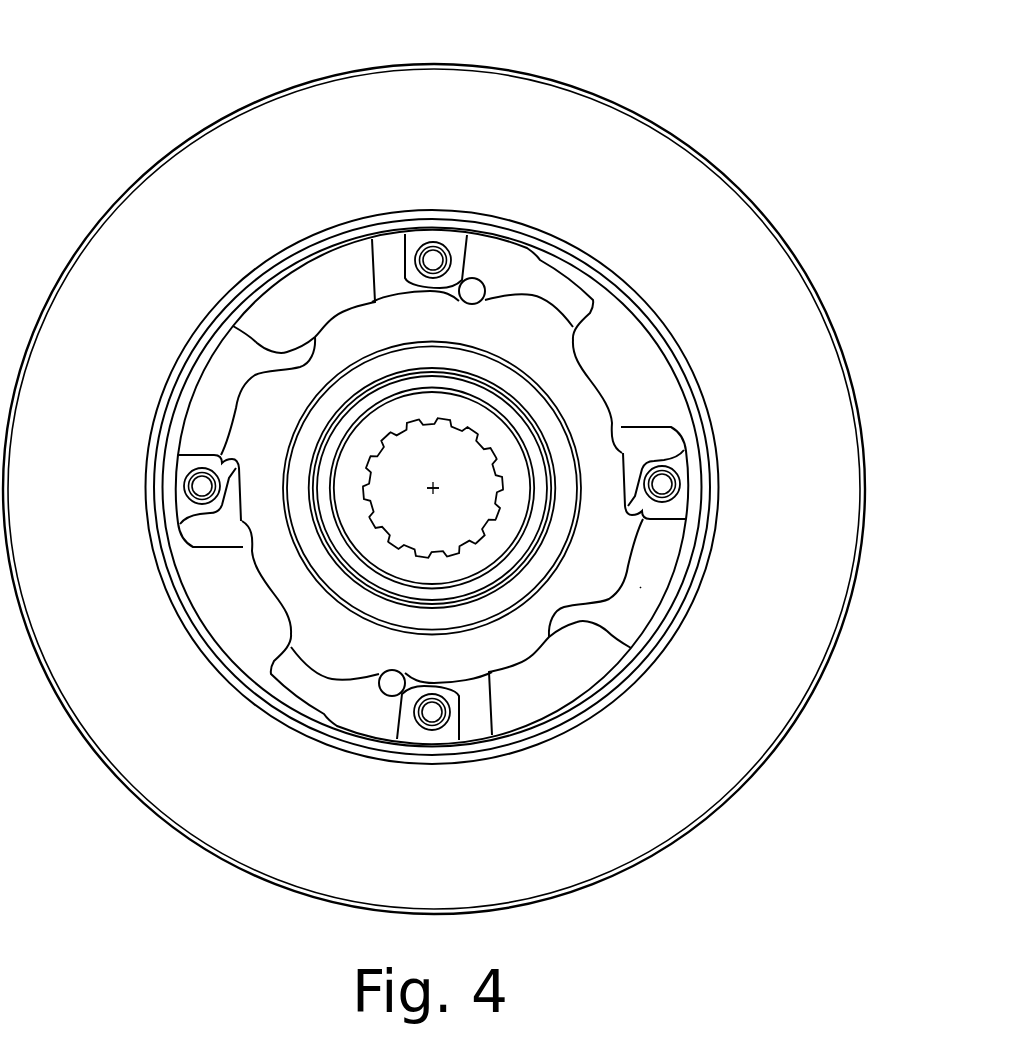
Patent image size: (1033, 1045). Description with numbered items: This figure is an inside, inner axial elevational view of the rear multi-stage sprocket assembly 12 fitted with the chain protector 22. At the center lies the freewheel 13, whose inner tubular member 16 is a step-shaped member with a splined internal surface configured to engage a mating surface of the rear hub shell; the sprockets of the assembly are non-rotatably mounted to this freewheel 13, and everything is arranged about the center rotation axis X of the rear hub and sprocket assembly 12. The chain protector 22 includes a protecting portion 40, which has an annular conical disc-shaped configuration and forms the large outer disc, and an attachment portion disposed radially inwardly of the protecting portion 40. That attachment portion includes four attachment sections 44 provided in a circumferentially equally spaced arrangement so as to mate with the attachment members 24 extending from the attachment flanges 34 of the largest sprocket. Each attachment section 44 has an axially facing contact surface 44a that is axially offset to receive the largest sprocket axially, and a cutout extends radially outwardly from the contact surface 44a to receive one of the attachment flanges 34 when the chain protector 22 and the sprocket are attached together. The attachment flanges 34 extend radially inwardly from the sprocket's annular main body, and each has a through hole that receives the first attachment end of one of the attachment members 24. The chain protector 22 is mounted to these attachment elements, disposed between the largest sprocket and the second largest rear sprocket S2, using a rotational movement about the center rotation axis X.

The rear multi-stage sprocket assembly 12 is at (716, 88).
The freewheel 13 is at (487, 418).
The inner tubular member 16 is at (535, 452).
The chain protector 22 is at (752, 188).
The attachment member 24 is at (433, 260).
The attachment flange 34 is at (460, 261).
The protecting portion 40 is at (160, 787).
The attachment section 44 is at (325, 295).
The axially facing contact surface 44a is at (388, 255).
The second largest rear sprocket S2 is at (640, 588).
The center rotation axis X is at (432, 488).